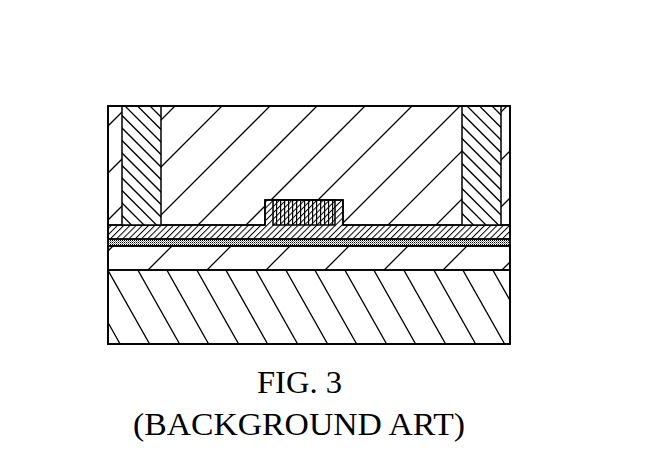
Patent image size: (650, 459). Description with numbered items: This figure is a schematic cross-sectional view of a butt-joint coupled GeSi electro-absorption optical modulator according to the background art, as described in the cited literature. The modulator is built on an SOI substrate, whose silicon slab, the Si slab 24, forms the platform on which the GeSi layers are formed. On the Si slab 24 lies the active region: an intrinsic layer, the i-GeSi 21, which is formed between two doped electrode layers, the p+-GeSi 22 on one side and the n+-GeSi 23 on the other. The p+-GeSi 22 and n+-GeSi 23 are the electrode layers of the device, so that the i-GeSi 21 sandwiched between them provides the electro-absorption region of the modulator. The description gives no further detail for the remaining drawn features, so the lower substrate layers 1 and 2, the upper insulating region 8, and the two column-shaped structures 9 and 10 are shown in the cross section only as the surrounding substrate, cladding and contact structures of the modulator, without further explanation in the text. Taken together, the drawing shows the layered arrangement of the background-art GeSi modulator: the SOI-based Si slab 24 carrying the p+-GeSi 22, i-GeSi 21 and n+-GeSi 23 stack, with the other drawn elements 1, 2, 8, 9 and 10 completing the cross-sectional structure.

The substrate 1 is at (497, 322).
The buffer layer 2 is at (488, 258).
The interlayer insulating layer 8 is at (358, 132).
The source electrode 9 is at (481, 113).
The drain electrode 10 is at (134, 116).
The i-GeSi 21 is at (305, 207).
The p+-GeSi 22 is at (408, 234).
The n+-GeSi 23 is at (235, 233).
The Si slab 24 is at (118, 241).